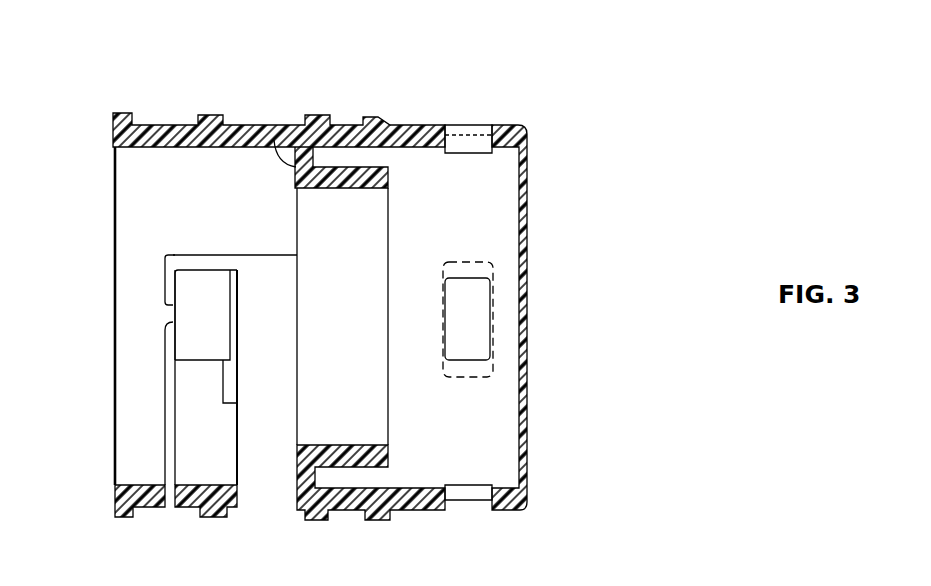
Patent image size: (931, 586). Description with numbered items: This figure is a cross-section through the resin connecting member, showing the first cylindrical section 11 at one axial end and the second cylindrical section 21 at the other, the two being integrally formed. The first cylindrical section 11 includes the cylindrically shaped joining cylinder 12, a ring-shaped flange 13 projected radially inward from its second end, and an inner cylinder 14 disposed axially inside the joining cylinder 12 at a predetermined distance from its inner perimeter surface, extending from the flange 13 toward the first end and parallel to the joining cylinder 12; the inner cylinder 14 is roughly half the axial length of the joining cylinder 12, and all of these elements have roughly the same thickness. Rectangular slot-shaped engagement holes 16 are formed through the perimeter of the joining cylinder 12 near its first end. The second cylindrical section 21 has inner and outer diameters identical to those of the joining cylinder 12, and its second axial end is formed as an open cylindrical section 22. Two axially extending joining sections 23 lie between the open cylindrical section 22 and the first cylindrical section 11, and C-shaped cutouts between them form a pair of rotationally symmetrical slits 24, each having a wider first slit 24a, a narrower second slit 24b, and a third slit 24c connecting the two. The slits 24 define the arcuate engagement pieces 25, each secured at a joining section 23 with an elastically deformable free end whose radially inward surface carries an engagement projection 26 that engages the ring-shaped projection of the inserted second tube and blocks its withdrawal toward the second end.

The first cylindrical section 11 is at (525, 92).
The joining cylinder 12 is at (413, 127).
The flange 13 is at (274, 140).
The inner cylinder 14 is at (343, 165).
The engagement holes 16 is at (483, 135).
The second cylindrical section 21 is at (305, 90).
The open cylindrical section 22 is at (141, 503).
The joining sections 23 is at (235, 125).
The slits 24 is at (284, 511).
The first slit 24a is at (261, 478).
The second slit 24b is at (170, 398).
The third slit 24c is at (165, 260).
The engagement pieces 25 is at (172, 438).
The engagement projections 26 is at (183, 336).